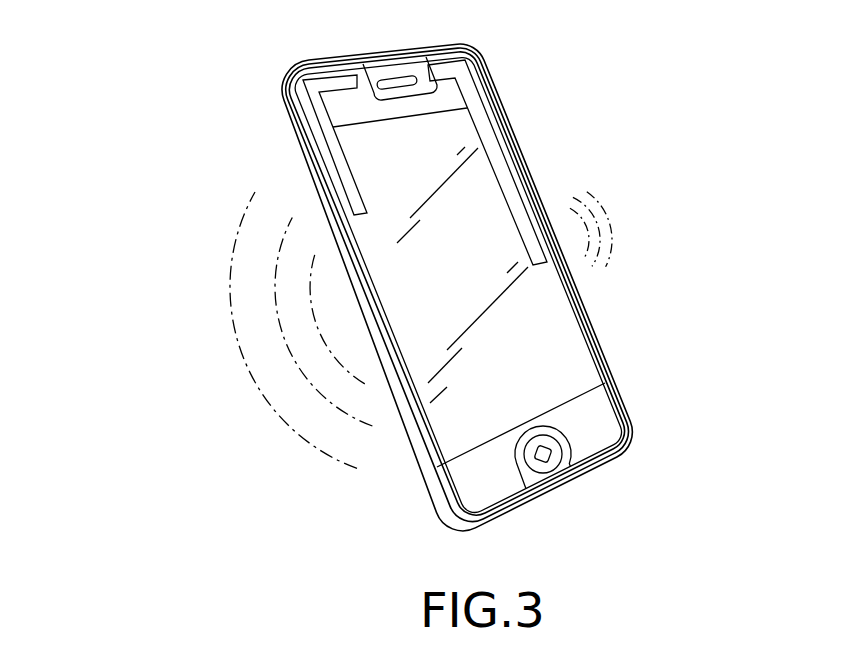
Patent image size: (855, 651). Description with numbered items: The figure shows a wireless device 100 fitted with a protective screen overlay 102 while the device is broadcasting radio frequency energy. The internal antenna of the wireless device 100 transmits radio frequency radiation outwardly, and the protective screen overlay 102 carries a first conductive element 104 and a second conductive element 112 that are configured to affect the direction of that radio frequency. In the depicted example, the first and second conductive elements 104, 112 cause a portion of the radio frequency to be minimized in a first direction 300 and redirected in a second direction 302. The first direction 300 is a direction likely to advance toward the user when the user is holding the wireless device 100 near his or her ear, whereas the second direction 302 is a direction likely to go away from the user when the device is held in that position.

The wireless device 100 is at (247, 70).
The protective screen overlay 102 is at (488, 77).
The first conductive element 104 is at (507, 165).
The second conductive element 112 is at (338, 153).
The first direction 300 is at (640, 226).
The second direction 302 is at (195, 318).